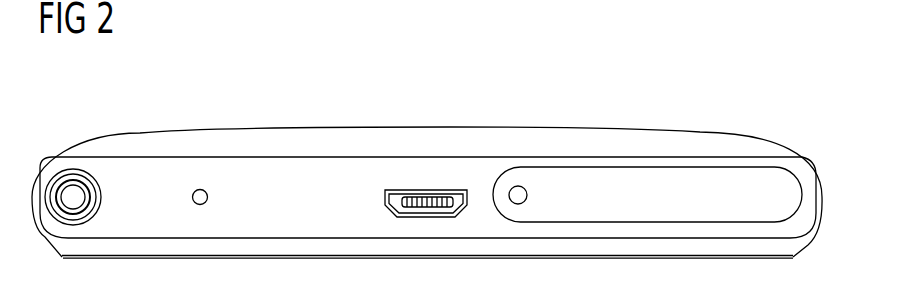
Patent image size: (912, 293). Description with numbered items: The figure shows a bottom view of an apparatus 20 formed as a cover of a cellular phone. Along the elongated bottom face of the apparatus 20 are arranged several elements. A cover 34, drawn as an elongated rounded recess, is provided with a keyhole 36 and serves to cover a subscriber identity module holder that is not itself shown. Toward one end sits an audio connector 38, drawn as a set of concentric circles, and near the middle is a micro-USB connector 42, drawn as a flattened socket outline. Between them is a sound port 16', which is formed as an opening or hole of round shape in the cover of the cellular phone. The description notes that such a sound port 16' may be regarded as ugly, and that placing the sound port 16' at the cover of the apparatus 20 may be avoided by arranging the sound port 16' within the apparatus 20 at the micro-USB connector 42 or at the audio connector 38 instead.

The apparatus 20 is at (736, 68).
The cover 34 is at (662, 167).
The keyhole 36 is at (527, 196).
The audio connector 38 is at (80, 193).
The micro-USB connector 42 is at (426, 190).
The sound port 16' is at (229, 203).